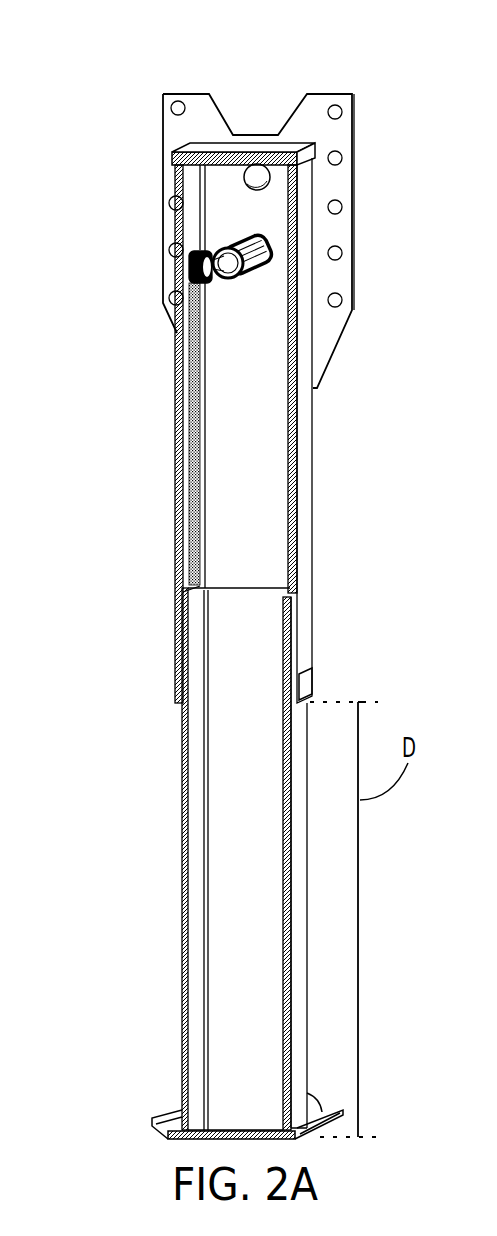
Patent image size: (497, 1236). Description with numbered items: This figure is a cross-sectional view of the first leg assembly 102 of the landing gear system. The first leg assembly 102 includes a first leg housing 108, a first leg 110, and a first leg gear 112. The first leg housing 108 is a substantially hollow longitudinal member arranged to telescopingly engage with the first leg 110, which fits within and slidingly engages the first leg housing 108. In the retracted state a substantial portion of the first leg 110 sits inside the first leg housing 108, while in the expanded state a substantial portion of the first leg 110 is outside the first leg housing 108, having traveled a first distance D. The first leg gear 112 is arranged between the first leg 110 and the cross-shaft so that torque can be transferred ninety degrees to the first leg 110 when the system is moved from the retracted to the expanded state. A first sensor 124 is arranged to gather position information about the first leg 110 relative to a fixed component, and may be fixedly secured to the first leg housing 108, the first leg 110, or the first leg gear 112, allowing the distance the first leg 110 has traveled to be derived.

The first leg assembly 102 is at (275, 78).
The first leg housing 108 is at (177, 375).
The first leg 110 is at (183, 828).
The first leg gear 112 is at (247, 283).
The first sensor 124 is at (310, 670).